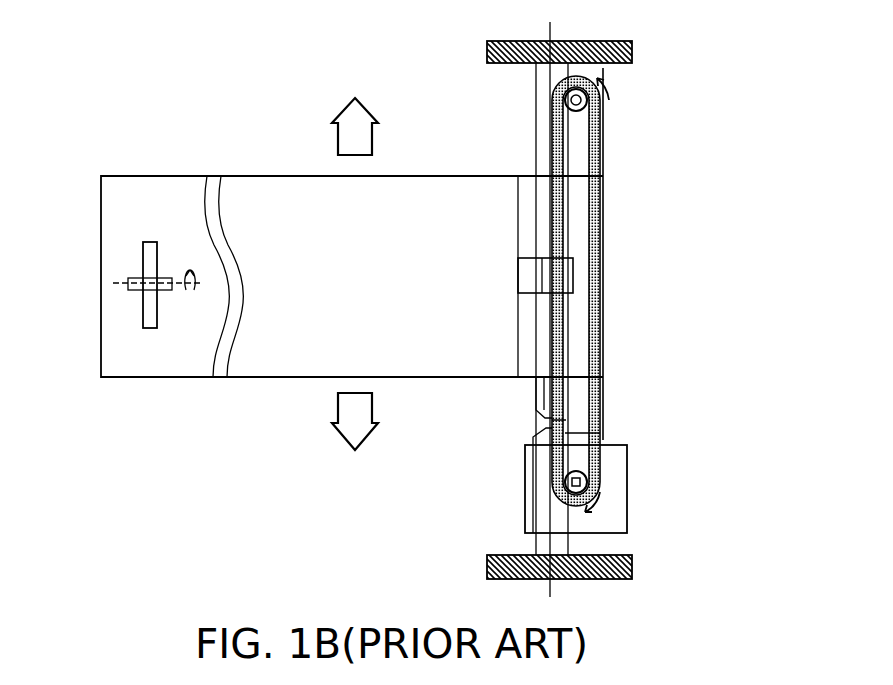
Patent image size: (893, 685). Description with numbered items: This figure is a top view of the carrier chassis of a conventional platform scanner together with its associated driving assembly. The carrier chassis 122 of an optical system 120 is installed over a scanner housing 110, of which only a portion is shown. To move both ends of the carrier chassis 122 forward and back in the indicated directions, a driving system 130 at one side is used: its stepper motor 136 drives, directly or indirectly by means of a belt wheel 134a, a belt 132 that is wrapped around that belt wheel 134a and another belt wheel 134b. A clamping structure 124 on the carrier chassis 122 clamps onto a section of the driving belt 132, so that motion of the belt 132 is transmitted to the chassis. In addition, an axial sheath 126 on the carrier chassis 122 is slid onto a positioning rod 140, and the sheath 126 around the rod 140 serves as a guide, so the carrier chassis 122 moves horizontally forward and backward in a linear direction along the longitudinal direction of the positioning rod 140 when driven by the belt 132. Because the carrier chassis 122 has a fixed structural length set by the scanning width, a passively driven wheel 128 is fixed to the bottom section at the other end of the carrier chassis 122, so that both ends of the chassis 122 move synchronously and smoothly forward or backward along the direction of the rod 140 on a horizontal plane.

The scanner housing 110 is at (632, 48).
The optical system 120 is at (154, 172).
The carrier chassis 122 is at (208, 175).
The clamping structure 124 is at (570, 265).
The axial sheath 126 is at (600, 343).
The passively driven wheel 128 is at (145, 263).
The driving system 130 is at (722, 413).
The belt 132 is at (577, 410).
The belt wheel 134a is at (599, 467).
The belt wheel 134b is at (605, 95).
The stepper motor 136 is at (598, 525).
The positioning rod 140 is at (574, 388).